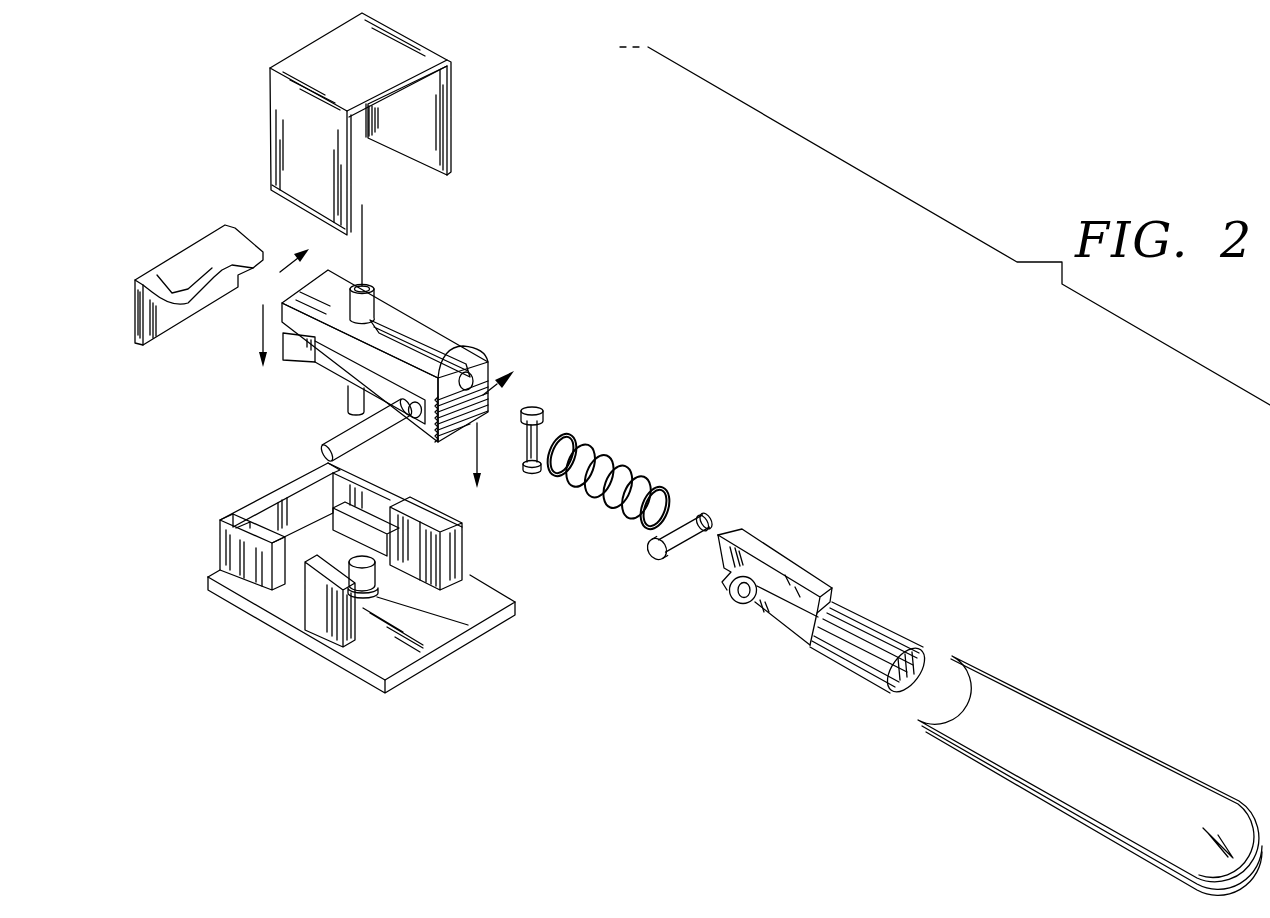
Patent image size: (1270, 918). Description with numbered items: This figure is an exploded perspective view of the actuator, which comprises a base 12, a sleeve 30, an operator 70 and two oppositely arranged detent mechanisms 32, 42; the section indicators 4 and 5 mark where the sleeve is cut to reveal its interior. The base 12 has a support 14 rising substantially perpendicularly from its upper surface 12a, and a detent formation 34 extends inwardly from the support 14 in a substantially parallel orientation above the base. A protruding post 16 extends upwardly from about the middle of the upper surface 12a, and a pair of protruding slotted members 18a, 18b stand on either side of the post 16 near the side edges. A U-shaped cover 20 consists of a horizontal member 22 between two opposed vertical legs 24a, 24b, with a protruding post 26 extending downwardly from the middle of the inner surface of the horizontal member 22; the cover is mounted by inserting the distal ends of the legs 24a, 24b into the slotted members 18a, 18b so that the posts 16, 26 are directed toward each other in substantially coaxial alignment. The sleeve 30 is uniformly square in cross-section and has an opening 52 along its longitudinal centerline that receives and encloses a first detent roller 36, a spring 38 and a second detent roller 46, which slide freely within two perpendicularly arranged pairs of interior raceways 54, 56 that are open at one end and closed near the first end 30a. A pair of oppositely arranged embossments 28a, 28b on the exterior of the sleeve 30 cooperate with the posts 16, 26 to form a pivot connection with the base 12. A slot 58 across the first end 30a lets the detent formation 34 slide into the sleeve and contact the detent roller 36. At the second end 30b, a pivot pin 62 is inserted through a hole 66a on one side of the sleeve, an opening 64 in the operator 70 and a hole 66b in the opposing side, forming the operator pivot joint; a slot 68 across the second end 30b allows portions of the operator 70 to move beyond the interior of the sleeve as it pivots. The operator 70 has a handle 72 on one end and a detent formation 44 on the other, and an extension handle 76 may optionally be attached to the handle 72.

The base 12 is at (378, 612).
The upper surface of the base 12a is at (392, 634).
The support 14 is at (167, 276).
The protruding post 16 is at (378, 573).
The protruding slotted member 18a is at (335, 635).
The protruding slotted member 18b is at (463, 558).
The U-shaped cover 20 is at (346, 76).
The horizontal member 22 is at (310, 44).
The vertical leg 24a is at (280, 148).
The vertical leg 24b is at (452, 118).
The protruding post 26 is at (378, 108).
The embossment 28a is at (348, 412).
The embossment 28b is at (380, 292).
The sleeve 30 is at (395, 400).
The first end of the sleeve 30a is at (282, 304).
The second end of the sleeve 30b is at (592, 392).
The detent mechanism 32 is at (375, 316).
The detent formation 34 is at (193, 255).
The detent roller 36 is at (527, 470).
The spring 38 is at (613, 460).
The detent mechanism 42 is at (737, 549).
The detent formation 44 is at (720, 583).
The detent roller 46 is at (648, 548).
The opening 52 is at (495, 440).
The raceway 54 is at (488, 393).
The raceway 56 is at (460, 442).
The slot 58 is at (293, 360).
The pivot pin 62 is at (321, 457).
The opening 64 is at (748, 580).
The hole 66a is at (413, 420).
The hole 66b is at (460, 362).
The slot 68 is at (340, 367).
The operator 70 is at (988, 740).
The handle 72 is at (870, 620).
The extension handle 76 is at (1058, 733).
The section line 4- 4 is at (404, 312).
The section line 5- 5 is at (365, 411).